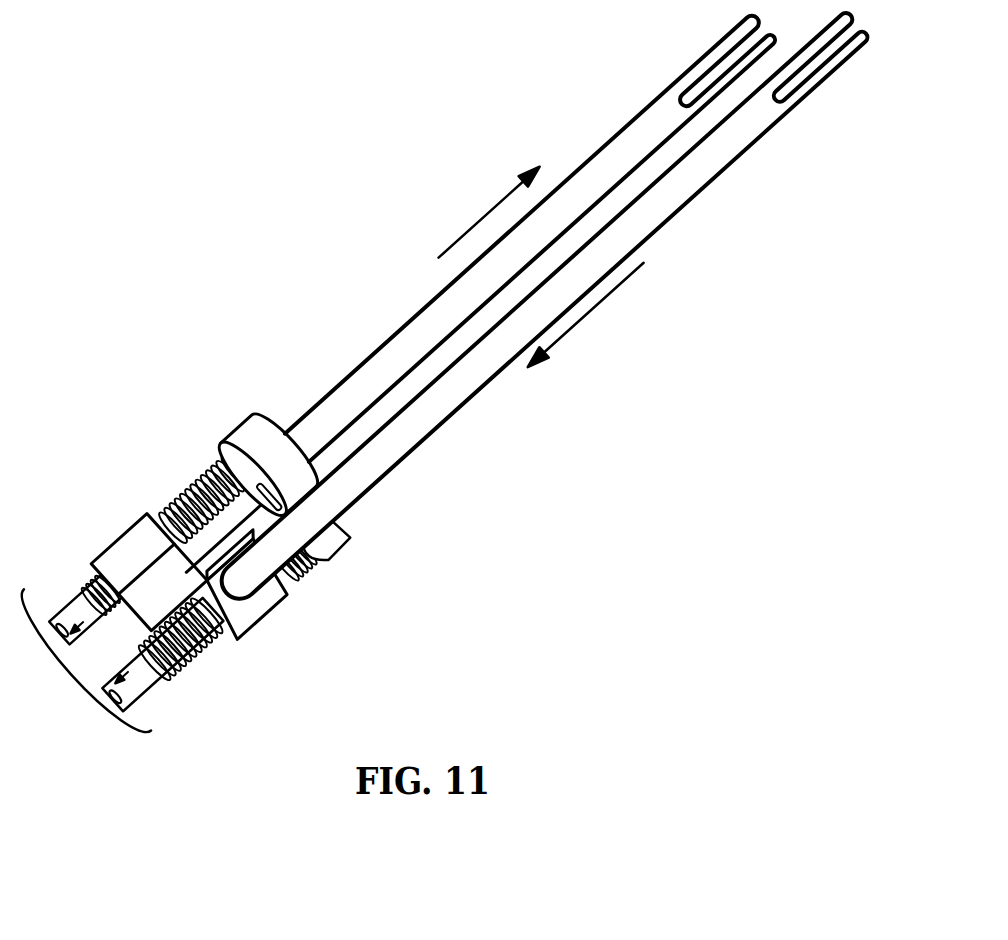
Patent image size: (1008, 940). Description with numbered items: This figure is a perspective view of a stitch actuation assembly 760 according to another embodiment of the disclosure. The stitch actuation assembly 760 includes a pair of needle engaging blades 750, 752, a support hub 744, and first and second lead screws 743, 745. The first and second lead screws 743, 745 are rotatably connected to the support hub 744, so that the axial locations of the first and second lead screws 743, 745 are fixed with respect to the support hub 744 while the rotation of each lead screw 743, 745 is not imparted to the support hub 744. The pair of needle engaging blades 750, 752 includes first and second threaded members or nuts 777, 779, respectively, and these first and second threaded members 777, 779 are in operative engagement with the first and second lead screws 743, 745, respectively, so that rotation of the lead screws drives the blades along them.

The first lead screw 743 is at (182, 662).
The support hub 744 is at (237, 427).
The second lead screw 745 is at (192, 485).
The needle engaging blade 750 is at (775, 124).
The needle engaging blade 752 is at (623, 128).
The stitch actuation assembly 760 is at (700, 349).
The first threaded member 777 is at (260, 613).
The second threaded member 779 is at (118, 540).